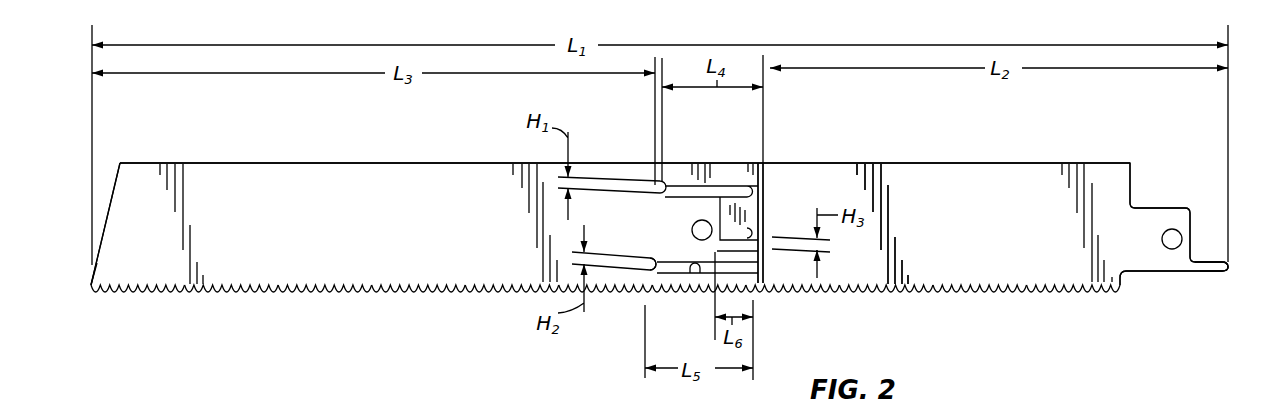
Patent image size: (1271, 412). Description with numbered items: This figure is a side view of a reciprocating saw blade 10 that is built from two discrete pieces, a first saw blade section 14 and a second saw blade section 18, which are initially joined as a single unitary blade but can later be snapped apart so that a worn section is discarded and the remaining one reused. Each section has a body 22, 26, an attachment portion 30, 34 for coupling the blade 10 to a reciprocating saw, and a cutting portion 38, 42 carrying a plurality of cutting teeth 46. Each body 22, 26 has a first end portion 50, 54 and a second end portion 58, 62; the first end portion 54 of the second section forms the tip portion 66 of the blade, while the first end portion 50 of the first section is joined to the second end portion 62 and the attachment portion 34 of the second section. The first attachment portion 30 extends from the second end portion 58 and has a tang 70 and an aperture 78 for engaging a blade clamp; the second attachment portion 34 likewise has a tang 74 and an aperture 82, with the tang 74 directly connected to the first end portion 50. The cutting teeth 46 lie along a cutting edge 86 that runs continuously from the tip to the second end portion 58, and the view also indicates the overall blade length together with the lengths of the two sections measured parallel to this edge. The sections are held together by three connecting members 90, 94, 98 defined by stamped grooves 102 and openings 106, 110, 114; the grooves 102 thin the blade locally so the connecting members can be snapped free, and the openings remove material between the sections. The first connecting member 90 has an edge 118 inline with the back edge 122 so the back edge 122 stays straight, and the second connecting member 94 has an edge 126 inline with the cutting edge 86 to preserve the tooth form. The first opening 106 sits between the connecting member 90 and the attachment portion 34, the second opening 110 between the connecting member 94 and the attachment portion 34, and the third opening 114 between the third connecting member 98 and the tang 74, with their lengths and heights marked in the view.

The saw blade 10 is at (1035, 112).
The first saw blade section 14 is at (1030, 275).
The second saw blade section 18 is at (238, 265).
The body 22 is at (893, 290).
The body 26 is at (295, 270).
The first attachment portion 30 is at (1155, 205).
The second attachment portion 34 is at (688, 178).
The cutting portion 38 is at (1065, 285).
The cutting portion 42 is at (350, 290).
The cutting teeth 46 is at (162, 273).
The first end portion 50 is at (762, 172).
The first end portion 54 is at (110, 160).
The second end portion 58 is at (1141, 165).
The second end portion 62 is at (645, 277).
The tip portion 66 is at (90, 292).
The tang 70 is at (1218, 272).
The tang 74 is at (738, 257).
The aperture 78 is at (1170, 249).
The aperture 82 is at (692, 229).
The cutting edge 86 is at (440, 290).
The first connecting member 90 is at (720, 165).
The second connecting member 94 is at (660, 283).
The third connecting member 98 is at (763, 237).
The grooves 102 is at (657, 180).
The first opening 106 is at (653, 186).
The second opening 110 is at (696, 285).
The third opening 114 is at (752, 216).
The edge 118 is at (710, 165).
The back edge 122 is at (283, 162).
The edge 126 is at (745, 290).